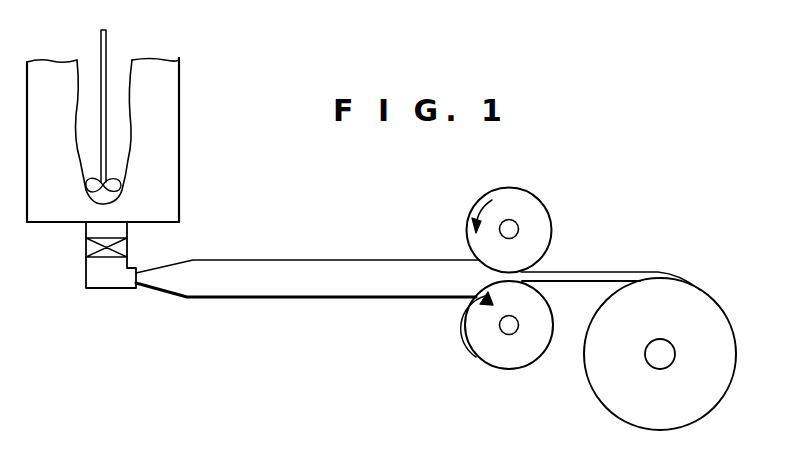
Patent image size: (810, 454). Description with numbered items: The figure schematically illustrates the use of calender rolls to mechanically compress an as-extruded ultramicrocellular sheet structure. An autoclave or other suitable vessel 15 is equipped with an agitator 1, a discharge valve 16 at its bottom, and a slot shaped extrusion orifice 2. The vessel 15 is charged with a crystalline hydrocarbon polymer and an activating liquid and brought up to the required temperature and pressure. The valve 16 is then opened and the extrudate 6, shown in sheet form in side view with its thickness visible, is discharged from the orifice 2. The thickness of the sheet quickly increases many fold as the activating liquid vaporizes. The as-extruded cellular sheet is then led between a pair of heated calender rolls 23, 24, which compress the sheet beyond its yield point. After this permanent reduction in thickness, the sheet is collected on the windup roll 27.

The agitator 1 is at (106, 33).
The autoclave or other suitable vessel 15 is at (179, 130).
The discharge valve 16 is at (86, 248).
The slot shaped extrusion orifice 2 is at (142, 289).
The extrudate 6 is at (203, 290).
The heated calender roll 23 is at (542, 212).
The heated calender roll 24 is at (515, 358).
The windup roll 27 is at (731, 347).